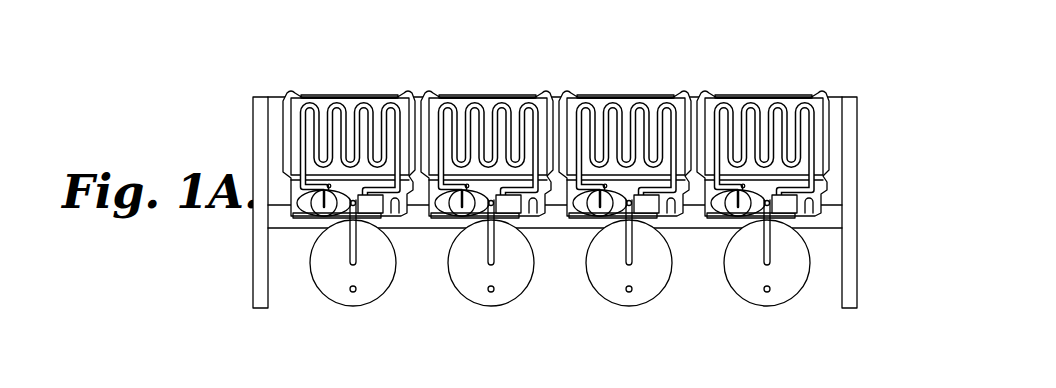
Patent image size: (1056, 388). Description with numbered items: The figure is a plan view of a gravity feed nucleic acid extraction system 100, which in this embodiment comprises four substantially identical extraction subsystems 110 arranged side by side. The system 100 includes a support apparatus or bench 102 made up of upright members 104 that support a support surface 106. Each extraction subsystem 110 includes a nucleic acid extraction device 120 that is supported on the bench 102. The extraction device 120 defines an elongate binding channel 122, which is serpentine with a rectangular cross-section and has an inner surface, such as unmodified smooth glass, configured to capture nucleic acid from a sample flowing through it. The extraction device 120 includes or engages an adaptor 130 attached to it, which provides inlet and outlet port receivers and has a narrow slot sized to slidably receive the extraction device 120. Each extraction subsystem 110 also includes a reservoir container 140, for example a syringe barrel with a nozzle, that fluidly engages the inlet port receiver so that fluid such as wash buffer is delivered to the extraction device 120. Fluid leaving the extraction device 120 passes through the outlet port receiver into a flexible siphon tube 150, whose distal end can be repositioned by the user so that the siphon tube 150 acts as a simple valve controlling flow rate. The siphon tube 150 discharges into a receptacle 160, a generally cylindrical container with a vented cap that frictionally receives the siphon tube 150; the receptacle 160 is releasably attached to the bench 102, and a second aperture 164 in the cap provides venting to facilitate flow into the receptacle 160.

The gravity feed nucleic acid extraction system 100 is at (949, 144).
The bench 102 is at (866, 275).
The upright members 104 is at (253, 281).
The support surface 106 is at (835, 197).
The extraction subsystem 110 is at (556, 123).
The nucleic acid extraction device 120 is at (552, 77).
The elongate binding channel 122 is at (569, 128).
The adaptor 130 is at (336, 236).
The reservoir container 140 is at (610, 229).
The siphon tube 150 is at (796, 267).
The receptacle 160 is at (544, 278).
The second aperture 164 is at (567, 322).